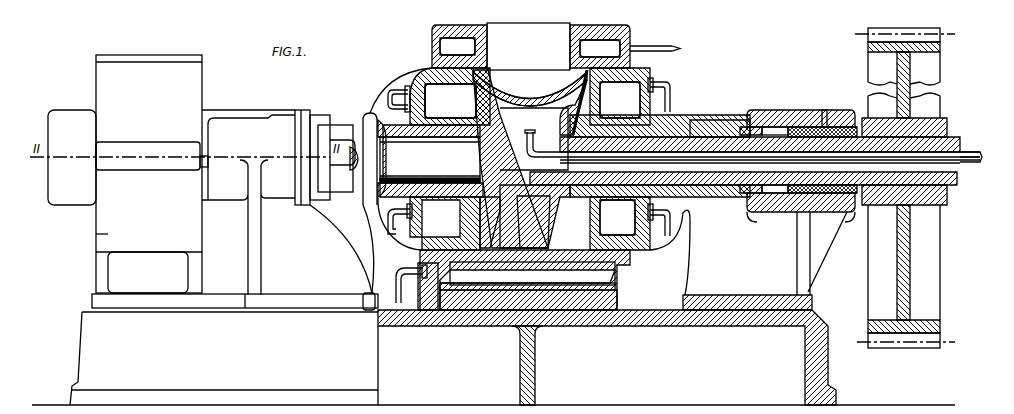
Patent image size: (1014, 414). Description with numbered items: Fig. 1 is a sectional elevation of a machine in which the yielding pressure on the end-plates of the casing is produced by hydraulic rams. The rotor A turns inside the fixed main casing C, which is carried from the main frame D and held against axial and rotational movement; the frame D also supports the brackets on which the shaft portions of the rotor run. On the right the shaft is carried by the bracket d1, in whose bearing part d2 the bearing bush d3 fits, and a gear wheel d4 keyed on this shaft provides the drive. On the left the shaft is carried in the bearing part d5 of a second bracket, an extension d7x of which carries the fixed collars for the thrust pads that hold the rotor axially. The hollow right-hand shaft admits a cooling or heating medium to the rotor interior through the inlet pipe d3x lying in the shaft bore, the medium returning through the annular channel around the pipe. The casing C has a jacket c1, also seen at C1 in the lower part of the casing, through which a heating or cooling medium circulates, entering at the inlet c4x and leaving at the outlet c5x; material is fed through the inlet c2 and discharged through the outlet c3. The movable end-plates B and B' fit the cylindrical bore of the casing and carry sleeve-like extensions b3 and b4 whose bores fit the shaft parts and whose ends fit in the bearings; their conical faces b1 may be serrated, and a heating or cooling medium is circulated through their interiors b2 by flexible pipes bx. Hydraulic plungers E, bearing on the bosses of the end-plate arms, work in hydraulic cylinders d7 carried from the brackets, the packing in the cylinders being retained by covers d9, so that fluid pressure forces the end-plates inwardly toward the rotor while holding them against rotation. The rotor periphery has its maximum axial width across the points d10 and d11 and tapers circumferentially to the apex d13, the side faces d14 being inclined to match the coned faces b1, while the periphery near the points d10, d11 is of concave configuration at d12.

The main frame D is at (86, 341).
The bearing part d5 is at (183, 89).
The hydraulic cylinders d7 is at (218, 198).
The bracket extension d7x is at (103, 234).
The hydraulic plungers E is at (342, 199).
The sleeve-like extension b4 is at (338, 130).
The end-plate interiors b2 is at (402, 73).
The end-plate faces b1 is at (466, 112).
The rotor A is at (466, 94).
The flexible circulating pipes bx is at (392, 96).
The jacket c1 is at (432, 47).
The point of maximum rotor width d10 is at (457, 46).
The material inlet c2 is at (528, 46).
The main casing C is at (626, 40).
The point of maximum rotor width d11 is at (600, 48).
The jacket outlet c5x is at (670, 50).
The jacket C1 is at (532, 285).
The movable end-plate B' is at (440, 193).
The covers d9 is at (530, 159).
The rotor side faces d14 is at (520, 92).
The concave portion d12 is at (545, 96).
The movable end-plate B is at (752, 194).
The material outlet c3 is at (504, 218).
The rotor apex d13 is at (552, 220).
The jacket inlet c4x is at (400, 284).
The bracket d1 is at (704, 132).
The sleeve-like extension b3 is at (720, 126).
The bearing part d2 is at (770, 110).
The bearing bush d3 is at (806, 112).
The inlet pipe d3x is at (968, 150).
The gear wheel d4 is at (935, 77).